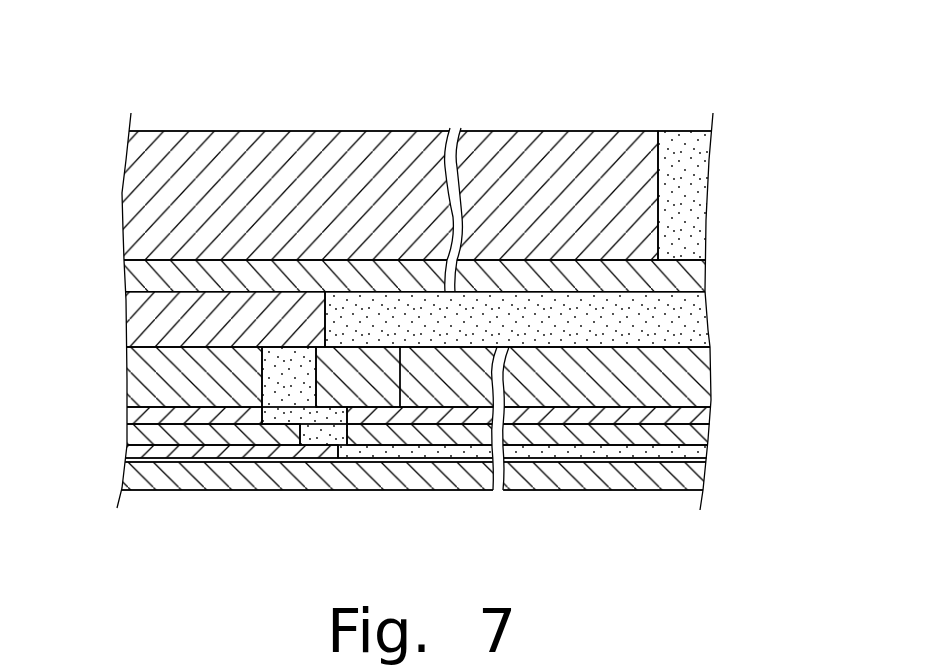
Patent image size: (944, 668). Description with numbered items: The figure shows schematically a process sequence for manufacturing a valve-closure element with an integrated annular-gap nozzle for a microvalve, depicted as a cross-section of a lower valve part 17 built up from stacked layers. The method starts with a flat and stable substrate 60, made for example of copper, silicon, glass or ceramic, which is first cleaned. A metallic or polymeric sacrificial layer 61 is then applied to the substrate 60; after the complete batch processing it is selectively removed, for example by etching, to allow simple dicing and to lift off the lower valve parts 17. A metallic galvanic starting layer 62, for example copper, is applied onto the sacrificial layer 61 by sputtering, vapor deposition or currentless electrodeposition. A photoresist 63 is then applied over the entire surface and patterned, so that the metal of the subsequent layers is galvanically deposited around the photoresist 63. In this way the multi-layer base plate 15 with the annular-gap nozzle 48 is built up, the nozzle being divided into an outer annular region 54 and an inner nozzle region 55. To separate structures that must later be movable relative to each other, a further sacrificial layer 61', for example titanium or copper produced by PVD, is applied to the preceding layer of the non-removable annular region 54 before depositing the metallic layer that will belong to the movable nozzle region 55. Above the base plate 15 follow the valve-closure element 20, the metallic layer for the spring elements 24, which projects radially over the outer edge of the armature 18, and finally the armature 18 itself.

The lower valve part 17 is at (512, 115).
The armature 18 is at (158, 199).
The spring elements 24 is at (677, 277).
The valve-closure element 20 is at (152, 326).
The photoresist 63 is at (685, 192).
The multi-layer base plate 15 is at (687, 389).
The sacrificial layer 61' is at (370, 377).
The annular-gap nozzle 48 is at (229, 421).
The nozzle region 55 is at (180, 435).
The outer annular region 54 is at (593, 440).
The galvanic starting layer 62 is at (150, 458).
The sacrificial layer 61 is at (377, 484).
The substrate 60 is at (365, 477).